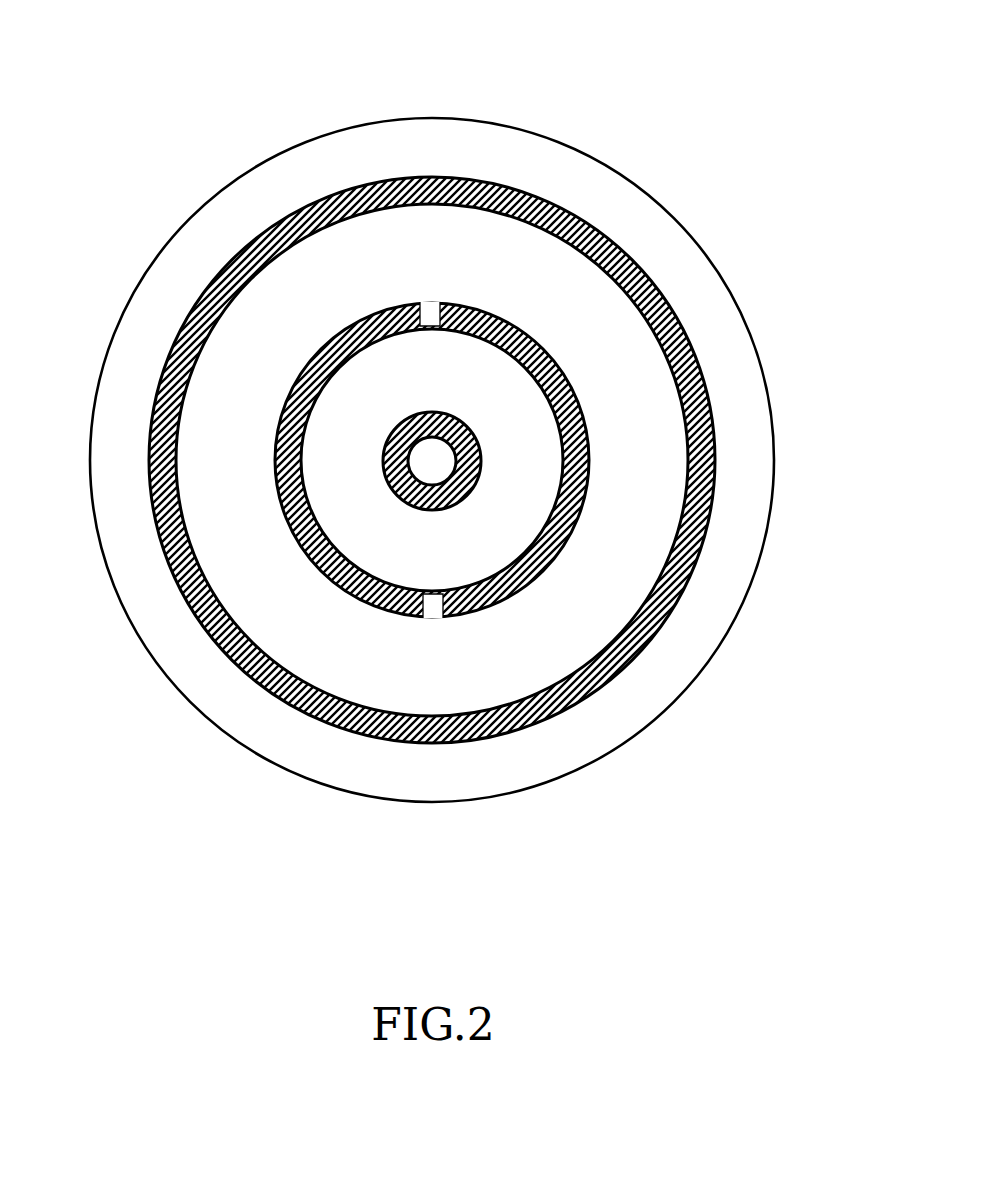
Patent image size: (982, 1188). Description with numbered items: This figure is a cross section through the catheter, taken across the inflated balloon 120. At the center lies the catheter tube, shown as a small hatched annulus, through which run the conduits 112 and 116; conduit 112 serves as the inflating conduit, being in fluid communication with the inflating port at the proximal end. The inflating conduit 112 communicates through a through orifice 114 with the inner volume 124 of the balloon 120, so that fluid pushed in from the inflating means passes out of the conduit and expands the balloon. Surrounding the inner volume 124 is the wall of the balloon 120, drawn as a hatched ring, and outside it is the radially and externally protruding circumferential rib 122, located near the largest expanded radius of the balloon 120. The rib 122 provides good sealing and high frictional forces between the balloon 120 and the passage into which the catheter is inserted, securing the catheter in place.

The fluid conduit 112 is at (367, 372).
The through orifice 114 is at (431, 316).
The conduit 116 is at (467, 423).
The balloon 120 is at (507, 195).
The circumferential rib 122 is at (195, 240).
The inner volume 124 is at (613, 313).